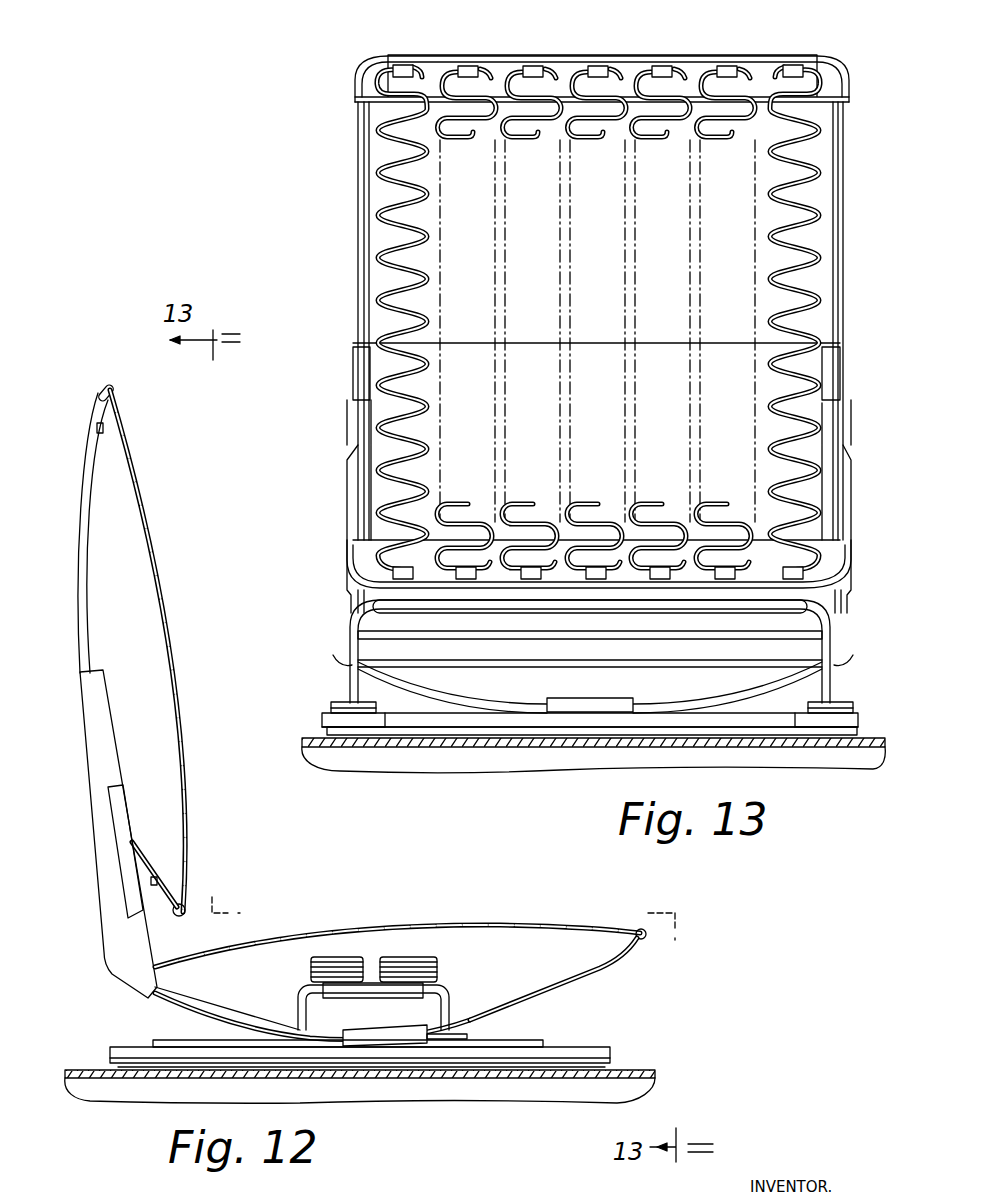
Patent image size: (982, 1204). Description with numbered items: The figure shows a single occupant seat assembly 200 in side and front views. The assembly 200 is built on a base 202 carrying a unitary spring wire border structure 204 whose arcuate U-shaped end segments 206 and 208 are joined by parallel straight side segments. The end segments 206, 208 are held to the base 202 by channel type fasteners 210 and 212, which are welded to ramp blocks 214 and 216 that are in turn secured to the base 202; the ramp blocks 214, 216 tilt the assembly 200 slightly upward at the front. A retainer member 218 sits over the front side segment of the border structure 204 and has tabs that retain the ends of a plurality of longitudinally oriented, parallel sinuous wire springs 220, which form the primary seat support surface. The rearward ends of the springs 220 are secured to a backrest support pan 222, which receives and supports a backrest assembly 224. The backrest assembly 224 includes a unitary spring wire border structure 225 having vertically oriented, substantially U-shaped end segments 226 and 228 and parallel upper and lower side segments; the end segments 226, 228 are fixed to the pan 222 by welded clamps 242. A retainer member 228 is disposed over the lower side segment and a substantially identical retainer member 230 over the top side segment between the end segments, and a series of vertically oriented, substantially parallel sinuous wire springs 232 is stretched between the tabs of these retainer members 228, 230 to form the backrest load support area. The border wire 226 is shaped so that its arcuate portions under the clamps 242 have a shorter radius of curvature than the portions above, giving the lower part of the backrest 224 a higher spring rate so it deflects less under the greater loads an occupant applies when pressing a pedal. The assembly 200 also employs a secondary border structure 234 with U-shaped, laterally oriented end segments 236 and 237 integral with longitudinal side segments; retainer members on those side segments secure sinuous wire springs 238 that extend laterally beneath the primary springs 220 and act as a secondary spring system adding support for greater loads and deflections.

In FIG. 13, the seat assembly 200 is at (345, 327).
In FIG. 12, the seat assembly 200 is at (281, 910).
In FIG. 13, the base 202 is at (325, 722).
In FIG. 12, the base 202 is at (615, 1050).
In FIG. 13, the unitary spring wire border structure 204 is at (348, 636).
In FIG. 12, the unitary spring wire border structure 204 is at (595, 985).
In FIG. 13, the end segment 206 is at (348, 606).
In FIG. 12, the end segment 206 is at (507, 1016).
In FIG. 13, the end segment 208 is at (830, 643).
In FIG. 13, the channel type fastener 210 is at (337, 702).
In FIG. 12, the channel type fastener 210 is at (392, 1032).
In FIG. 13, the channel type fastener 212 is at (848, 702).
In FIG. 13, the ramp block 214 is at (367, 712).
In FIG. 12, the ramp block 214 is at (425, 1040).
In FIG. 13, the ramp block 216 is at (837, 717).
In FIG. 12, the ramp block 216 is at (360, 1086).
In FIG. 13, the retainer member 218 is at (637, 613).
In FIG. 12, the retainer member 218 is at (650, 938).
In FIG. 12, the sinuous wire springs 220 is at (553, 928).
In FIG. 13, the backrest support pan 222 is at (851, 465).
In FIG. 12, the backrest support pan 222 is at (125, 975).
In FIG. 13, the backrest assembly 224 is at (355, 170).
In FIG. 12, the backrest assembly 224 is at (142, 492).
In FIG. 13, the unitary spring wire border structure 225 is at (362, 232).
In FIG. 12, the unitary spring wire border structure 225 is at (85, 467).
In FIG. 13, the end segment 226 is at (357, 117).
In FIG. 12, the end segment 226 is at (80, 612).
In FIG. 13, the end segment / retainer member 228 is at (840, 158).
In FIG. 12, the end segment / retainer member 228 is at (172, 890).
In FIG. 13, the retainer member 230 is at (695, 62).
In FIG. 12, the retainer member 230 is at (103, 385).
In FIG. 13, the sinuous wire springs 232 is at (517, 502).
In FIG. 12, the sinuous wire springs 232 is at (166, 630).
In FIG. 13, the secondary border structure 234 is at (490, 698).
In FIG. 12, the secondary border structure 234 is at (297, 988).
In FIG. 13, the end segment 236 is at (707, 698).
In FIG. 12, the end segment 236 is at (447, 998).
In FIG. 12, the end segment 237 is at (297, 1017).
In FIG. 12, the sinuous wire springs 238 is at (390, 958).
In FIG. 13, the welded clamps 242 is at (355, 385).